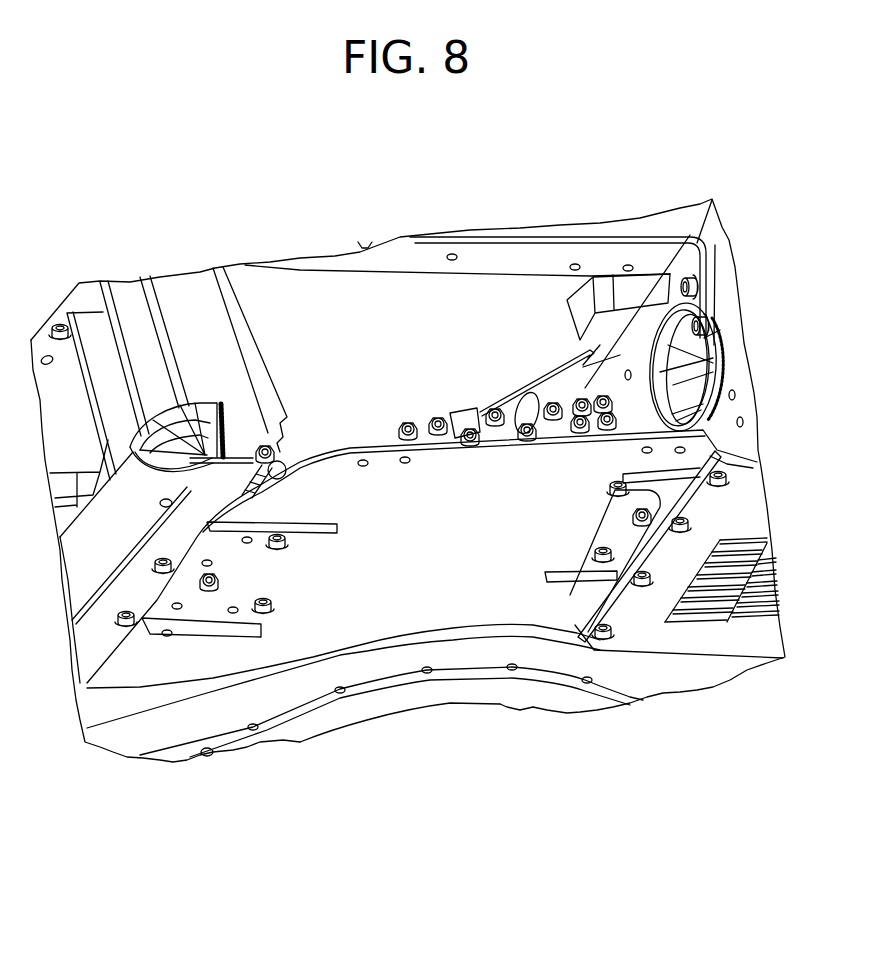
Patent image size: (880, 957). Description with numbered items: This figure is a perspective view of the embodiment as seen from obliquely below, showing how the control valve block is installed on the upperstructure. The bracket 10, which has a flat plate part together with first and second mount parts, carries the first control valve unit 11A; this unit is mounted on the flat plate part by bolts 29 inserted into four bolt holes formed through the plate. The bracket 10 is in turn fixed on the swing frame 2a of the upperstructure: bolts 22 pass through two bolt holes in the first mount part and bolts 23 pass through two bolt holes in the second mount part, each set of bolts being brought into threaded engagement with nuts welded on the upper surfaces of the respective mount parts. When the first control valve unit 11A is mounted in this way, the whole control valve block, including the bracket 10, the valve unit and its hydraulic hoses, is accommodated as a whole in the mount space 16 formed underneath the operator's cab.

The swing frame 2a is at (85, 660).
The bracket 10 is at (431, 597).
The first control valve unit 11A is at (437, 421).
The mount space 16 is at (363, 422).
The bolts 22 is at (127, 628).
The bolts 23 is at (644, 590).
The bolts 29 is at (263, 616).